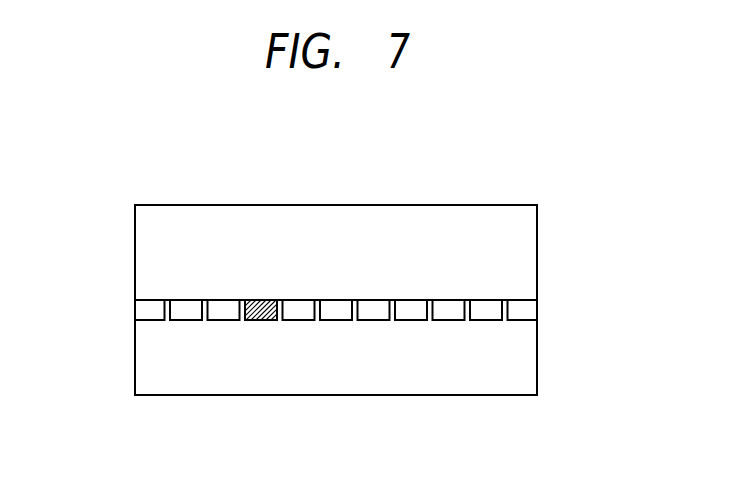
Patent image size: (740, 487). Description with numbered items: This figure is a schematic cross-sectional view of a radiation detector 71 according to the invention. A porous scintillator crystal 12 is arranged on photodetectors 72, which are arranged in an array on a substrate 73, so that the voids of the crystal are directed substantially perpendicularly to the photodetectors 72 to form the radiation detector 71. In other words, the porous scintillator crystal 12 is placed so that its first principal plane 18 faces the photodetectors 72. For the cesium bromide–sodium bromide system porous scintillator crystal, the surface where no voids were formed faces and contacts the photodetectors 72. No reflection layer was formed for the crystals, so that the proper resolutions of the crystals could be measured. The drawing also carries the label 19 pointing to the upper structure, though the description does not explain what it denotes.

The radiation detector 71 is at (327, 126).
The light emitting element assembly 19 is at (471, 193).
The porous scintillator crystal 12 is at (150, 241).
The photodetectors 72 is at (188, 313).
The substrate 73 is at (212, 380).
The first principal plane 18 is at (527, 310).